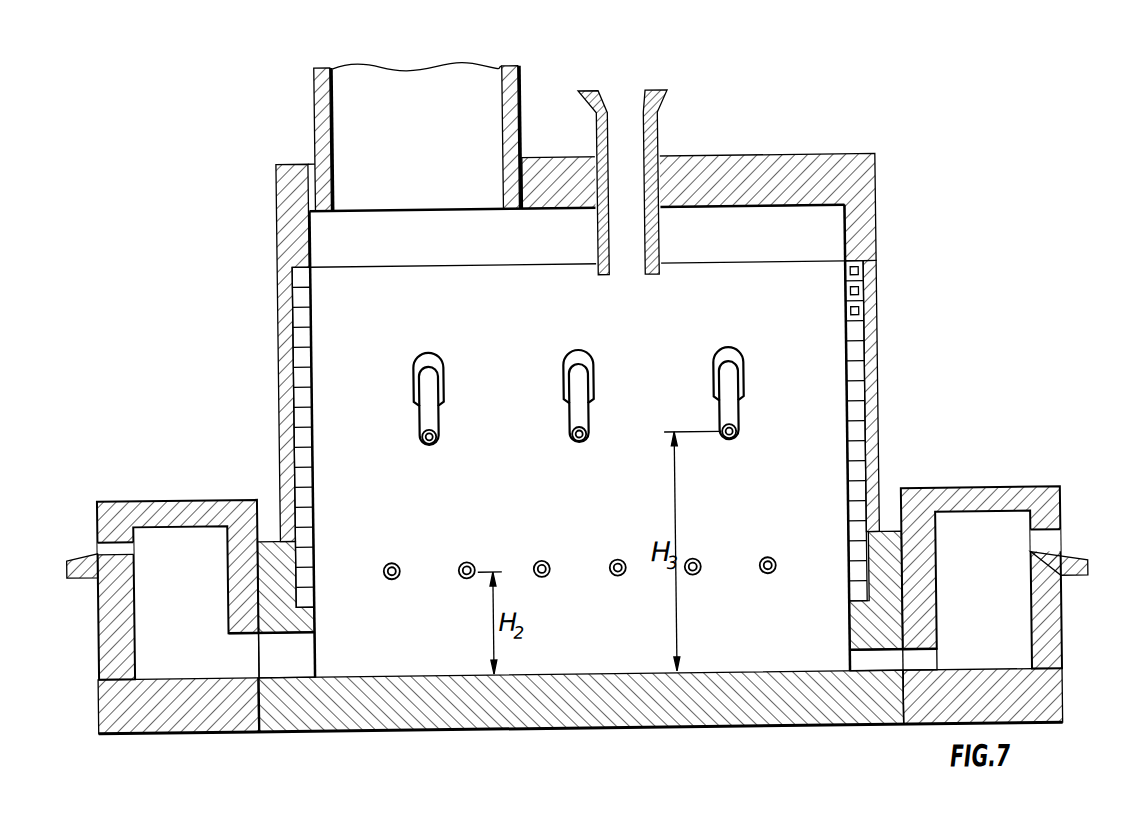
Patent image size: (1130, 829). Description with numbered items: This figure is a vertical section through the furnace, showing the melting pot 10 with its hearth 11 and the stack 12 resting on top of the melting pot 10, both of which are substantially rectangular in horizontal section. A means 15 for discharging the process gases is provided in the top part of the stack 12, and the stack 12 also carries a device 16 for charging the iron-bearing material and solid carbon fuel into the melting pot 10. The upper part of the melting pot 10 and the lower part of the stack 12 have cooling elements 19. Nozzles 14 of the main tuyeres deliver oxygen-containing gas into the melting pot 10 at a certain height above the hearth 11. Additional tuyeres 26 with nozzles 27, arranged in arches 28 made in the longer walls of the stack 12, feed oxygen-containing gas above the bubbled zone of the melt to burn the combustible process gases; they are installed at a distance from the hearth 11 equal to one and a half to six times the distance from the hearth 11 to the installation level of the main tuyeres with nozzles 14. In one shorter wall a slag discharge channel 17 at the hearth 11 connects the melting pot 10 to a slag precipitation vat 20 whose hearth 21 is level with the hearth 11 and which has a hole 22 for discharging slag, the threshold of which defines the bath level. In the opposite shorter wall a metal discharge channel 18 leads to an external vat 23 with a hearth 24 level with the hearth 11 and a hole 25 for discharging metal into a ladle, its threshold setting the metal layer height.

The melting pot 10 is at (883, 556).
The hearth 11 is at (569, 705).
The stack 12 is at (284, 326).
The nozzles 14 is at (386, 562).
The means for discharging process gases 15 is at (326, 105).
The charging device 16 is at (656, 133).
The slag discharge channel 17 is at (292, 659).
The metal discharge channel 18 is at (881, 664).
The cooling elements 19 is at (855, 386).
The slag precipitation vat 20 is at (105, 629).
The hearth of the slag precipitation vat 21 is at (133, 710).
The slag discharge hole 22 is at (101, 546).
The external vat for precipitation of intermediate product 23 is at (1052, 639).
The hearth of the external vat 24 is at (977, 685).
The metal discharge hole 25 is at (1047, 547).
The additional tuyeres 26 is at (729, 374).
The nozzles of additional tuyeres 27 is at (427, 443).
The arches 28 is at (417, 404).